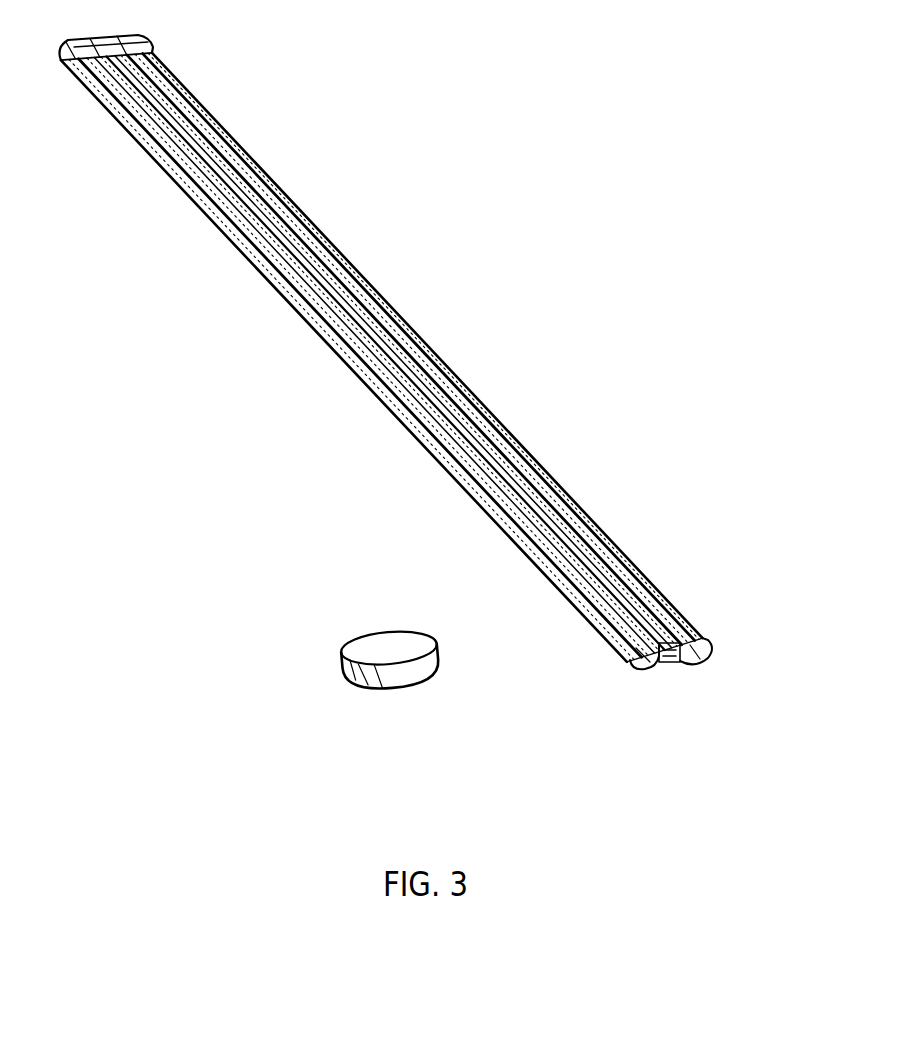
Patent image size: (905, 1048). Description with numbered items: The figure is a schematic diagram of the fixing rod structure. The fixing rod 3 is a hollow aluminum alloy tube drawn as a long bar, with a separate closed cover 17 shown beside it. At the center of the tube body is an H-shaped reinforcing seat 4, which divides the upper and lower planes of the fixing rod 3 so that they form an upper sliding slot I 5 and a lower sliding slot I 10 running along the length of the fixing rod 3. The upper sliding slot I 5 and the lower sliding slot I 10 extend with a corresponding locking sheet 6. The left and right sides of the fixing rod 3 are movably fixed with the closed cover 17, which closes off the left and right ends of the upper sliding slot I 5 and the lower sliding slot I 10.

The fixing rod 3 is at (463, 390).
The H-shaped reinforcing seat 4 is at (695, 660).
The upper sliding slot I 5 is at (408, 363).
The locking sheet 6 is at (680, 640).
The lower sliding slot I 10 is at (666, 655).
The closed cover 17 is at (380, 632).